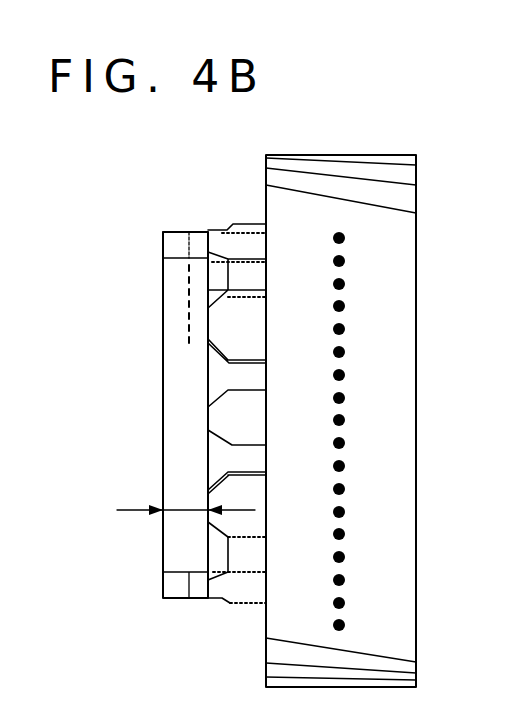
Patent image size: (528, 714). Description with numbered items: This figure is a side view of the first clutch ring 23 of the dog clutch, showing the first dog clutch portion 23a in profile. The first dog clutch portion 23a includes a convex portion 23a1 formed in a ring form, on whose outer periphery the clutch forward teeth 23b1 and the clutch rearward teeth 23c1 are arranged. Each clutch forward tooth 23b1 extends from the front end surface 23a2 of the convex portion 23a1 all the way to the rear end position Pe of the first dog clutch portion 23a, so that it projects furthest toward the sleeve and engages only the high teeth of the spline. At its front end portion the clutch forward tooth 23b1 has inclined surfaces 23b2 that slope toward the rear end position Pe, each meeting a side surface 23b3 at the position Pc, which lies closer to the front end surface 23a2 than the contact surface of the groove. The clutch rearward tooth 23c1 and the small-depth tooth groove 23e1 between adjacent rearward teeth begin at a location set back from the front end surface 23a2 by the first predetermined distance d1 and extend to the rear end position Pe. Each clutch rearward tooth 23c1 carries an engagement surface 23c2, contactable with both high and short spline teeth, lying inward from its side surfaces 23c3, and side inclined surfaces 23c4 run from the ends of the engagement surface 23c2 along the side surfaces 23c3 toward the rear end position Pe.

The first clutch ring 23 is at (158, 604).
The first dog clutch portion 23a is at (243, 205).
The convex portion 23a1 is at (188, 413).
The front end surface 23a2 is at (162, 368).
The clutch forward tooth 23b1 is at (162, 253).
The inclined surface 23b2 is at (172, 238).
The side surface 23b3 is at (197, 240).
The clutch rearward tooth 23c1 is at (235, 550).
The engagement surface 23c2 is at (207, 515).
The side surface 23c3 is at (250, 542).
The side inclined surface 23c4 is at (213, 488).
The small-depth tooth groove 23e1 is at (242, 457).
The position Pc is at (188, 216).
The rear end position Pe is at (266, 372).
The first predetermined distance d1 is at (170, 514).